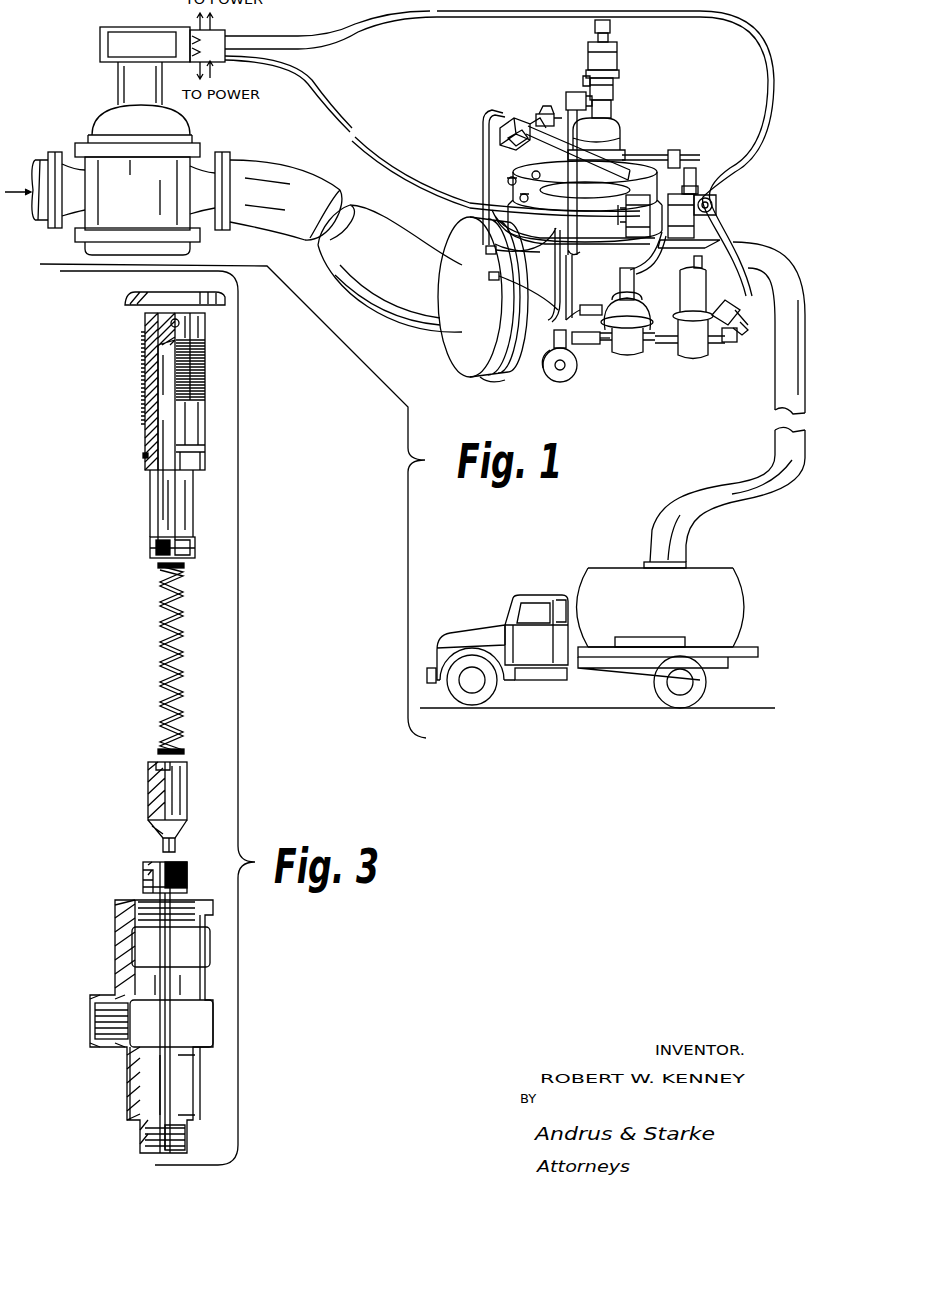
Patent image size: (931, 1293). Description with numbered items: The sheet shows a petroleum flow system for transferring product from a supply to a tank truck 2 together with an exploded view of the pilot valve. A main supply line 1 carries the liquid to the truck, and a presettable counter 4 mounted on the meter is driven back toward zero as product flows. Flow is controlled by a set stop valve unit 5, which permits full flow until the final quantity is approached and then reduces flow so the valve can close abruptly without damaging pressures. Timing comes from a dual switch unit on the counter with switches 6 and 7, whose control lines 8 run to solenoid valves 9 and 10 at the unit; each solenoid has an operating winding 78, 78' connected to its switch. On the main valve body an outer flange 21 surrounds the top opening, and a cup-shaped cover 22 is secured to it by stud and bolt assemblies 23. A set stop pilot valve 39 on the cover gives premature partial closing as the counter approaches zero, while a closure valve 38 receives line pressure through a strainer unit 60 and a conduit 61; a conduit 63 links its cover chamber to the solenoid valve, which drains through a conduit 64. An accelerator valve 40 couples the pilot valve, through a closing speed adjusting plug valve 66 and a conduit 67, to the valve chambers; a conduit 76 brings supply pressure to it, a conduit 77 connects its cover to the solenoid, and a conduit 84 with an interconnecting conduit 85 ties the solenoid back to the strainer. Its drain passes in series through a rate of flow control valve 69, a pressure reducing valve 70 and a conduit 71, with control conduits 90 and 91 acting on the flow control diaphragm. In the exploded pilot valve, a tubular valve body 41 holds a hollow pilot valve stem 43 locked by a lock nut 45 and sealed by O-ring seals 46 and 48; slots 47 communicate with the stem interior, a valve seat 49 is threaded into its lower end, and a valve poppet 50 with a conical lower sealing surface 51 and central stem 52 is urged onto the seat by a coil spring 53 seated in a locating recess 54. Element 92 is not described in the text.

In FIG. 1, the main supply line 1 is at (40, 152).
In FIG. 1, the tank truck 2 is at (734, 681).
In FIG. 1, the presettable counter 4 is at (100, 47).
In FIG. 1, the set stop valve unit 5 is at (707, 80).
In FIG. 1, the switch 6 is at (196, 60).
In FIG. 1, the switch 7 is at (196, 32).
In FIG. 1, the control lines 8 is at (306, 40).
In FIG. 1, the solenoid valve 9 is at (598, 236).
In FIG. 1, the solenoid valve 10 is at (690, 238).
In FIG. 1, the outer flange 21 is at (540, 238).
In FIG. 1, the cover 22 is at (630, 158).
In FIG. 1, the stud and bolt assemblies 23 is at (508, 181).
In FIG. 1, the closure valve 38 is at (553, 102).
In FIG. 1, the set stop pilot valve 39 is at (630, 40).
In FIG. 1, the accelerator valve 40 is at (558, 391).
In FIG. 3, the valve body 41 is at (122, 976).
In FIG. 3, the pilot valve stem 43 is at (145, 433).
In FIG. 3, the lock nut 45 is at (125, 302).
In FIG. 3, the O-ring seal 46 is at (143, 455).
In FIG. 3, the slots 47 is at (157, 508).
In FIG. 3, the O-ring seal 48 is at (150, 545).
In FIG. 3, the valve seat 49 is at (180, 866).
In FIG. 3, the valve poppet 50 is at (148, 804).
In FIG. 3, the conical lower sealing surface 51 is at (150, 822).
In FIG. 3, the central stem 52 is at (163, 845).
In FIG. 3, the coil spring 53 is at (160, 672).
In FIG. 3, the locating recess 54 is at (158, 765).
In FIG. 1, the strainer unit 60 is at (527, 109).
In FIG. 1, the conduit 61 is at (482, 158).
In FIG. 1, the conduit 63 is at (615, 142).
In FIG. 1, the conduit 64 is at (698, 160).
In FIG. 1, the closing speed adjusting plug valve 66 is at (584, 78).
In FIG. 1, the conduit 67 is at (574, 268).
In FIG. 1, the rate of flow control valve 69 is at (639, 362).
In FIG. 1, the pressure reducing valve 70 is at (696, 365).
In FIG. 1, the conduit 71 is at (730, 306).
In FIG. 1, the conduit 76 is at (515, 328).
In FIG. 1, the conduit 77 is at (560, 268).
In FIG. 1, the operating winding 78 is at (634, 230).
In FIG. 1, the operating winding 78' is at (722, 203).
In FIG. 1, the conduit 84 is at (660, 245).
In FIG. 1, the interconnecting conduit 85 is at (535, 150).
In FIG. 1, the control conduit 90 is at (578, 312).
In FIG. 1, the control conduit 91 is at (580, 344).
In FIG. 1, the ring bottom 92 is at (495, 380).